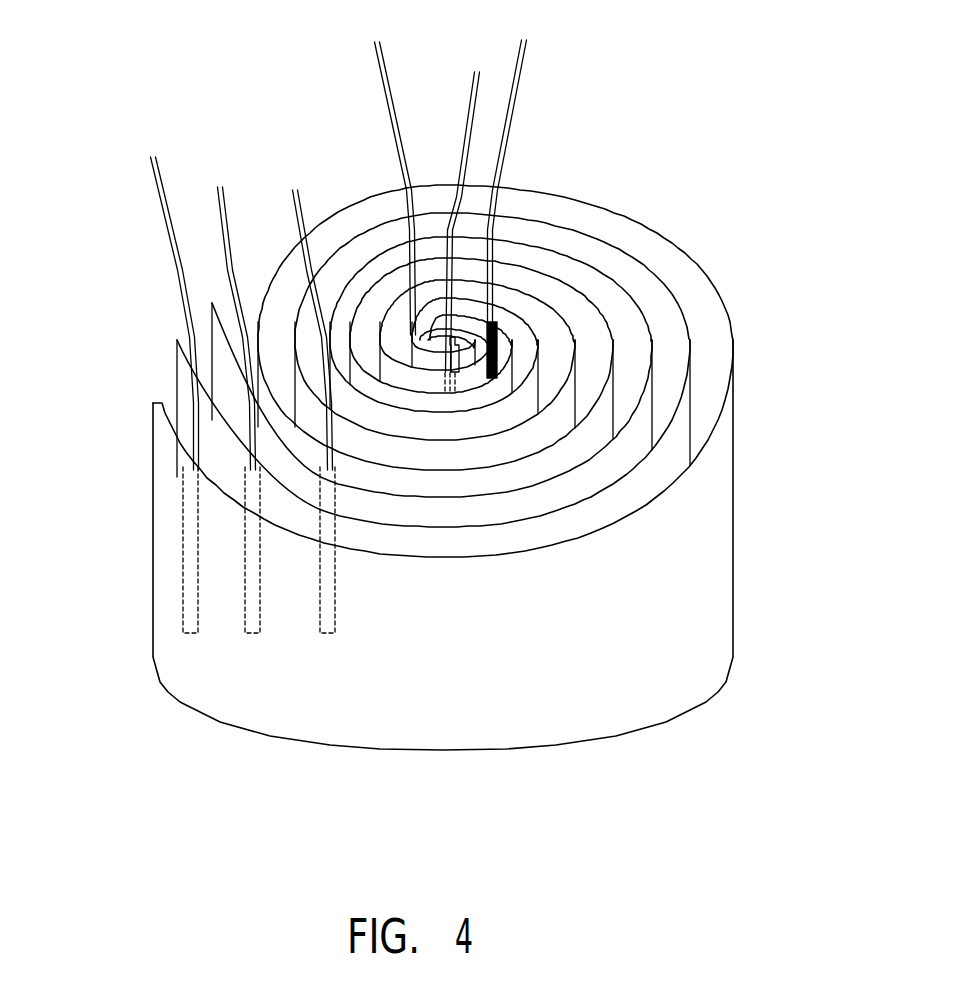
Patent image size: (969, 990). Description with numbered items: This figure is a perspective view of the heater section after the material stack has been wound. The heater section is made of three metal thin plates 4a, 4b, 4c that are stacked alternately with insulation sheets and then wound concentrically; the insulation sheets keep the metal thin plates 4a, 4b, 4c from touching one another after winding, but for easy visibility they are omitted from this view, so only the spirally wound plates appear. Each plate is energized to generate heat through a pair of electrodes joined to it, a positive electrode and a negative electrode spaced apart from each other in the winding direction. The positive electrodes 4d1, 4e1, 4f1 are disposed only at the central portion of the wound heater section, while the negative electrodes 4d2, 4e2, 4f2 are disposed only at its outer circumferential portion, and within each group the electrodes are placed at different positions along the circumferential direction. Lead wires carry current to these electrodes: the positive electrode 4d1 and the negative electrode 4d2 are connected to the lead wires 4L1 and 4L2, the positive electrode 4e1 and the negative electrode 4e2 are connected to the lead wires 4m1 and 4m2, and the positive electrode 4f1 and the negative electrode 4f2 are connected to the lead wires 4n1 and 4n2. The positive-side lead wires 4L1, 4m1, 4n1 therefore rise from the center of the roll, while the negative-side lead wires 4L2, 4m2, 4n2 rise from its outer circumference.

The metal thin plate 4a is at (153, 437).
The metal thin plate 4b is at (177, 375).
The metal thin plate 4c is at (212, 332).
The lead wire 4L1 is at (473, 102).
The lead wire 4L2 is at (166, 232).
The lead wire 4m1 is at (378, 79).
The lead wire 4m2 is at (216, 200).
The lead wire 4n1 is at (528, 79).
The lead wire 4n2 is at (293, 208).
The positive electrode 4d1 is at (450, 393).
The negative electrode 4d2 is at (190, 633).
The positive electrode 4e1 is at (446, 330).
The negative electrode 4e2 is at (251, 633).
The positive electrode 4f1 is at (497, 343).
The negative electrode 4f2 is at (327, 633).